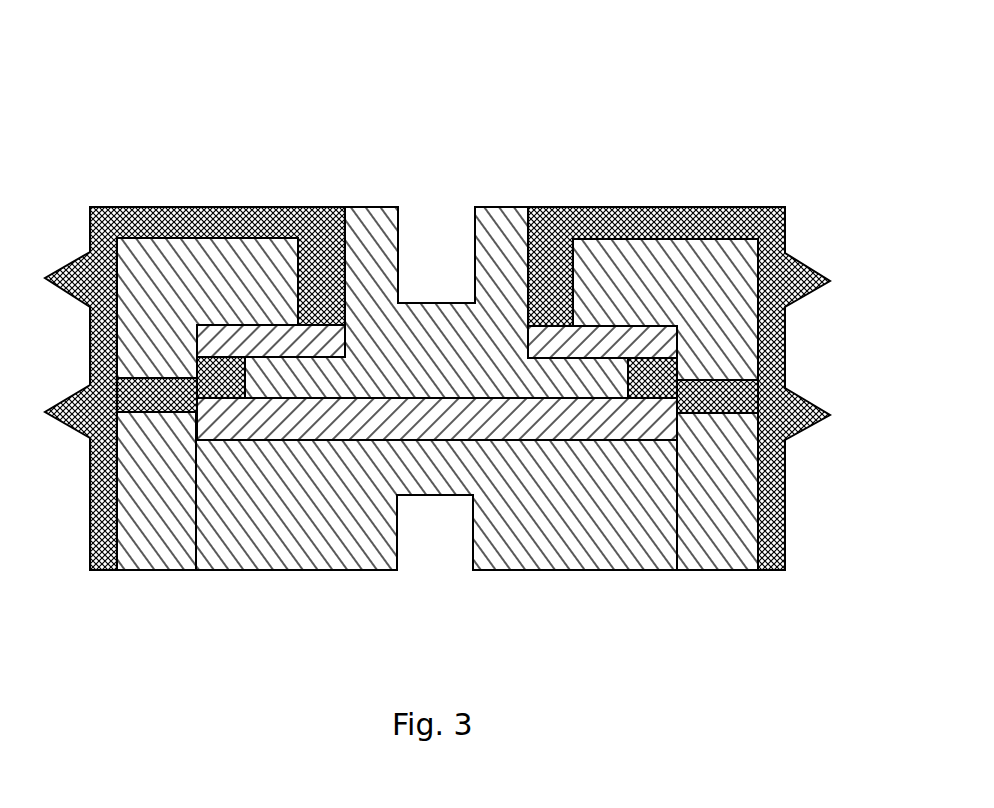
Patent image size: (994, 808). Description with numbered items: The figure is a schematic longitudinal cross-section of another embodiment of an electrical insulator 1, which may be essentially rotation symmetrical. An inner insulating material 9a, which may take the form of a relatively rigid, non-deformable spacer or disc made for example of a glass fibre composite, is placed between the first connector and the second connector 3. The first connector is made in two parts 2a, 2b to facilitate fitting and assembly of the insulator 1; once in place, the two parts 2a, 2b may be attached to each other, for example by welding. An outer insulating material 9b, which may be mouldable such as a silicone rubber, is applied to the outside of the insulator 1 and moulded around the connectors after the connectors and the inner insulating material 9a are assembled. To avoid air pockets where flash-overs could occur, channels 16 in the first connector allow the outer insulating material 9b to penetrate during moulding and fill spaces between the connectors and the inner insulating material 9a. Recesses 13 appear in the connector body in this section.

The electrical insulator 1 is at (448, 335).
The first part of first connector 2a is at (578, 555).
The second part of first connector 2b is at (205, 255).
The second connector 3 is at (512, 238).
The inner insulating material 9a is at (244, 343).
The outer insulating material 9b is at (130, 222).
The recess 13 is at (402, 255).
The channels 16 is at (132, 392).